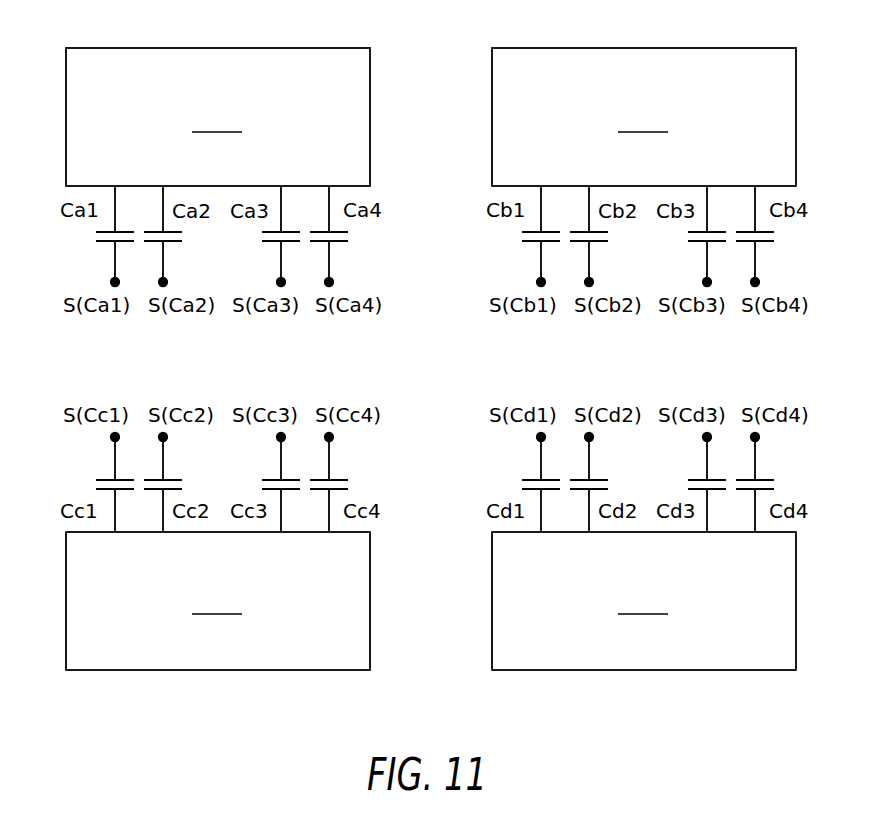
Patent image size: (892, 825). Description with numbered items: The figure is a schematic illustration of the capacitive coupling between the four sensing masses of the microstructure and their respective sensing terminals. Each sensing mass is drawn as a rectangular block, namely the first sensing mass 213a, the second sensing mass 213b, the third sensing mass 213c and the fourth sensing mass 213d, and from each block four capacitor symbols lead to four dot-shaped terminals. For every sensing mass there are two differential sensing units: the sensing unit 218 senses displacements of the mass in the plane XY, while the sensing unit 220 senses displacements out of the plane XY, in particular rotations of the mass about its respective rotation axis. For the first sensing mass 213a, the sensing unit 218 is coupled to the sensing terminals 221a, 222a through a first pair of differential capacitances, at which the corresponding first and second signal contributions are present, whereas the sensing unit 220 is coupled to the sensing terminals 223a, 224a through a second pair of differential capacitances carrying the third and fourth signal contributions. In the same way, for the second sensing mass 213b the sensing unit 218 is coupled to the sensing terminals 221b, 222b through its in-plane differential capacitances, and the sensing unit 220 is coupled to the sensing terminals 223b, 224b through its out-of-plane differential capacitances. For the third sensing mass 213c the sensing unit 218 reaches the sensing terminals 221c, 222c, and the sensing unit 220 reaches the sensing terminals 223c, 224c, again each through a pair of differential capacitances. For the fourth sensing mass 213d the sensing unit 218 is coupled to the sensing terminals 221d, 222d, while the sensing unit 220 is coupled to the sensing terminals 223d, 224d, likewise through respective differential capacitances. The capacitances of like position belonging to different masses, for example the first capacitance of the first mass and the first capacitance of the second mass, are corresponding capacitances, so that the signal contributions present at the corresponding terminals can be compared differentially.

The first sensing mass 213a is at (218, 117).
The second sensing mass 213b is at (644, 117).
The third sensing mass 213c is at (218, 601).
The fourth sensing mass 213d is at (644, 601).
The sensing unit 218 is at (84, 253).
The sensing unit 220 is at (338, 253).
The sensing terminal 221a is at (115, 282).
The sensing terminal 222a is at (163, 282).
The sensing terminal 223a is at (281, 282).
The sensing terminal 224a is at (329, 282).
The sensing terminal 221b is at (541, 282).
The sensing terminal 222b is at (589, 282).
The sensing terminal 223b is at (707, 282).
The sensing terminal 224b is at (755, 282).
The sensing terminal 221c is at (115, 437).
The sensing terminal 222c is at (163, 437).
The sensing terminal 223c is at (281, 437).
The sensing terminal 224c is at (329, 437).
The sensing terminal 221d is at (541, 437).
The sensing terminal 222d is at (589, 437).
The sensing terminal 223d is at (707, 437).
The sensing terminal 224d is at (755, 437).